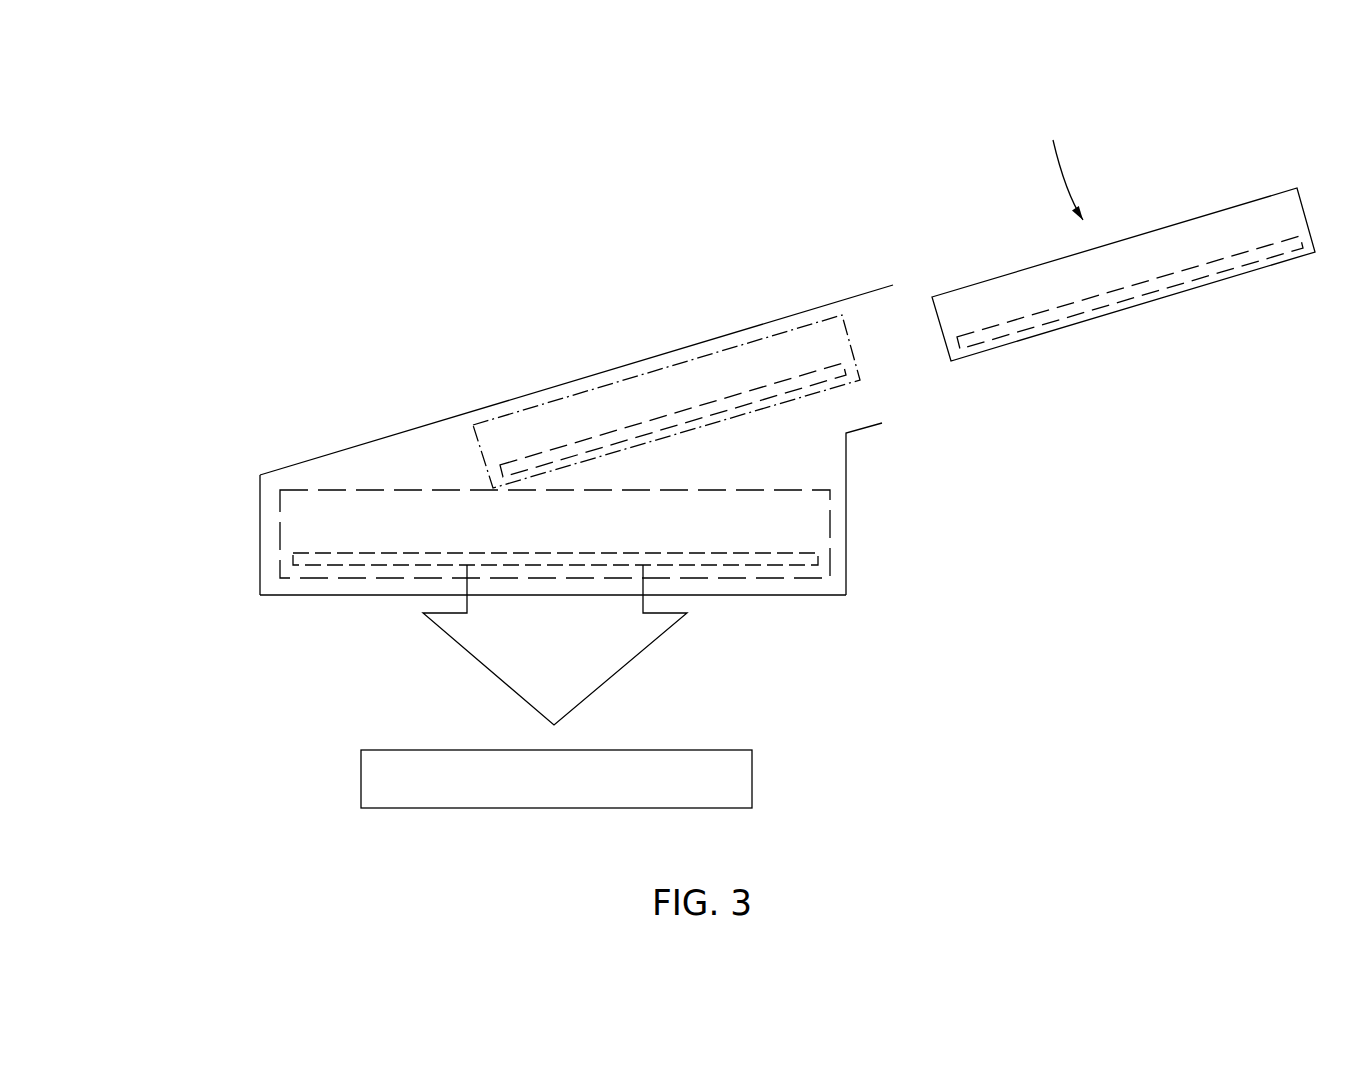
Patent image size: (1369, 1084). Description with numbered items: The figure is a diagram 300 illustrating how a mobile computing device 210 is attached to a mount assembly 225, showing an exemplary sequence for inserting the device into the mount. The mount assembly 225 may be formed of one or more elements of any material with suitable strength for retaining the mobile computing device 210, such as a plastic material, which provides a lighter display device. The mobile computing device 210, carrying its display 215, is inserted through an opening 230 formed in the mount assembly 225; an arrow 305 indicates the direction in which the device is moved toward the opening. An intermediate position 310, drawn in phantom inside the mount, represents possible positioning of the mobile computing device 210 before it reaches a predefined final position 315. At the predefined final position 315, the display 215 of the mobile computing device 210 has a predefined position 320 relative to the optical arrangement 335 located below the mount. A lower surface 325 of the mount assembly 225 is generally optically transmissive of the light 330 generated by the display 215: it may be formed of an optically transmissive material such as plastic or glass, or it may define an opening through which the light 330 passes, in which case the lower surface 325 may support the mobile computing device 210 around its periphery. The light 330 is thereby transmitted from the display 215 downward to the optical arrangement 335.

The diagram 300 is at (204, 163).
The direction of movement 305 is at (1060, 164).
The mobile computing device 210 is at (1213, 213).
The display 215 is at (313, 553).
The mount assembly 225 is at (295, 462).
The opening 230 is at (896, 304).
The intermediate position 310 is at (553, 400).
The predefined final position 315 is at (830, 500).
The predefined position 320 is at (834, 555).
The lower surface 325 is at (777, 597).
The light 330 is at (475, 658).
The optical arrangement 335 is at (739, 789).